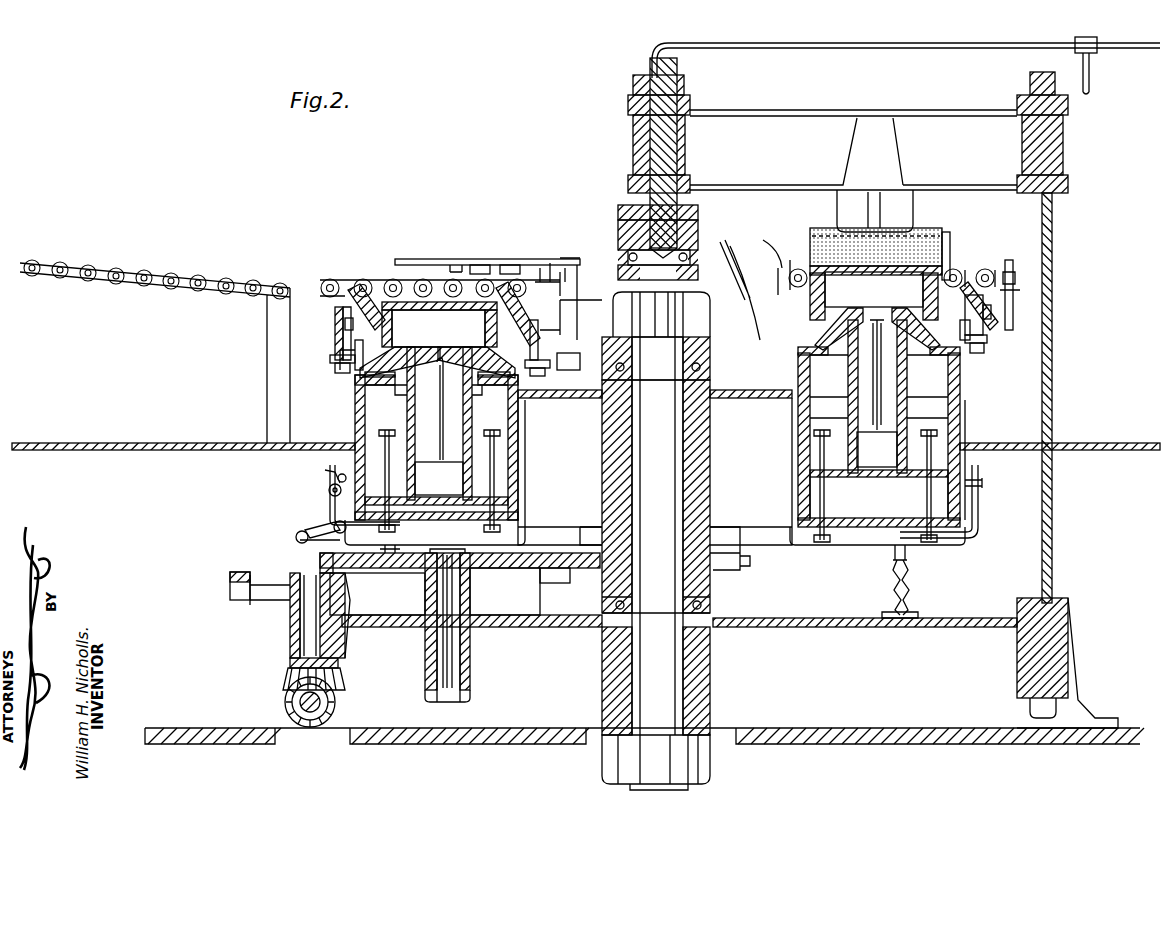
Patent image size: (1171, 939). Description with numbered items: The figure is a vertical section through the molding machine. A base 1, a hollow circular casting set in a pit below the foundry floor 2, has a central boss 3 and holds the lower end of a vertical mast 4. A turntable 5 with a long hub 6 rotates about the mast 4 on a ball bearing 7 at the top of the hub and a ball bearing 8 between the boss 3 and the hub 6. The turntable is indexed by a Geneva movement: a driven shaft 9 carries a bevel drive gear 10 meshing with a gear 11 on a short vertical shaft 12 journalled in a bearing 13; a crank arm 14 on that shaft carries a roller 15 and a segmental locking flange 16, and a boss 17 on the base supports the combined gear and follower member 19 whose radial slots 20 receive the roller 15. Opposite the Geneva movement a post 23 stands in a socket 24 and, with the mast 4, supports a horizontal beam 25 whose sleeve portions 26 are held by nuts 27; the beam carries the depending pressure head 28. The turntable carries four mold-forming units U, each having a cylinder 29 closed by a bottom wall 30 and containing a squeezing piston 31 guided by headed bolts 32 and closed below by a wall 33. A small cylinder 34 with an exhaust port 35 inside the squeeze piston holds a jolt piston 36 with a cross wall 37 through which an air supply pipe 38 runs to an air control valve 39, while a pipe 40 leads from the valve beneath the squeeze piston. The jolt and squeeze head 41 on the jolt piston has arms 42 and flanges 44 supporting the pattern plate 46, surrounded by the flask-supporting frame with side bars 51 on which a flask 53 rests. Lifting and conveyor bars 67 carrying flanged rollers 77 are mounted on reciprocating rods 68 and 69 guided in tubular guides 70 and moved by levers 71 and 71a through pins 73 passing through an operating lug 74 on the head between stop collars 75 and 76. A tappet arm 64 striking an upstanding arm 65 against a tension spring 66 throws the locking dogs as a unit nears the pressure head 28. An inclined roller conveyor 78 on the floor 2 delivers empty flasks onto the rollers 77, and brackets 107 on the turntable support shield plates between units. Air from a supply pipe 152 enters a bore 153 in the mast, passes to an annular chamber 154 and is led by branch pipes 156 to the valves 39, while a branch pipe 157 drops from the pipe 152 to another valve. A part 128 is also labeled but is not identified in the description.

The base 1 is at (812, 618).
The floor 2 is at (180, 443).
The boss 3 is at (712, 662).
The column or mast 4 is at (683, 465).
The turntable or turret 5 is at (450, 406).
The hub portion 6 is at (595, 430).
The ball bearing 7 is at (712, 385).
The ball bearing 8 is at (712, 600).
The shaft 9 is at (285, 704).
The bevel drive gear 10 is at (285, 690).
The gear 11 is at (338, 665).
The vertical shaft 12 is at (290, 614).
The bearing 13 is at (290, 633).
The crank arm 14 is at (265, 585).
The roller 15 is at (238, 572).
The segmental locking flange 16 is at (385, 597).
The boss 17 is at (470, 598).
The combined gear and follower member 19 is at (535, 557).
The radial slots 20 is at (392, 566).
The post 23 is at (1052, 322).
The socket 24 is at (1020, 660).
The horizontal beam 25 is at (795, 130).
The sleeve portions 26 is at (628, 126).
The nuts 27 is at (684, 80).
The pressure head 28 is at (913, 208).
The cylinders 29 is at (540, 445).
The horizontal wall 30 is at (850, 545).
The squeezing piston 31 is at (366, 410).
The headed bolts 32 is at (352, 433).
The wall 33 is at (657, 512).
The small cylinder 34 is at (476, 455).
The exhaust port 35 is at (505, 488).
The jolt piston 36 is at (473, 405).
The cross wall 37 is at (966, 408).
The air supply pipe 38 is at (328, 490).
The air control valve 39 is at (325, 470).
The air supply pipe 40 is at (979, 520).
The jolt and squeeze head 41 is at (437, 347).
The arms 42 is at (335, 314).
The vertical flanges 44 is at (462, 333).
The pattern plate 46 is at (855, 265).
The side bars 51 is at (1073, 304).
The flask member 53 is at (948, 240).
The tappet arm 64 is at (895, 560).
The upstanding arm 65 is at (912, 570).
The tension spring 66 is at (915, 600).
The lifting and conveyor bars 67 is at (415, 259).
The reciprocating rods 68 is at (336, 278).
The reciprocating rods 69 is at (548, 265).
The tubular guides 70 is at (345, 336).
The levers 71 is at (358, 372).
The levers 71a is at (665, 362).
The pins 73 is at (330, 358).
The operating lug 74 is at (987, 348).
The stop collar 75 is at (345, 342).
The stop collar 76 is at (340, 362).
The flanged rollers 77 is at (442, 278).
The roller conveyor 78 is at (182, 270).
The brackets 107 is at (470, 262).
The lever 128 is at (321, 525).
The pipe 152 is at (900, 43).
The vertical bore 153 is at (677, 144).
The annular chamber 154 is at (698, 228).
The branch pipes 156 is at (1070, 482).
The branch pipe 157 is at (1080, 66).
The mold-forming units U is at (962, 395).